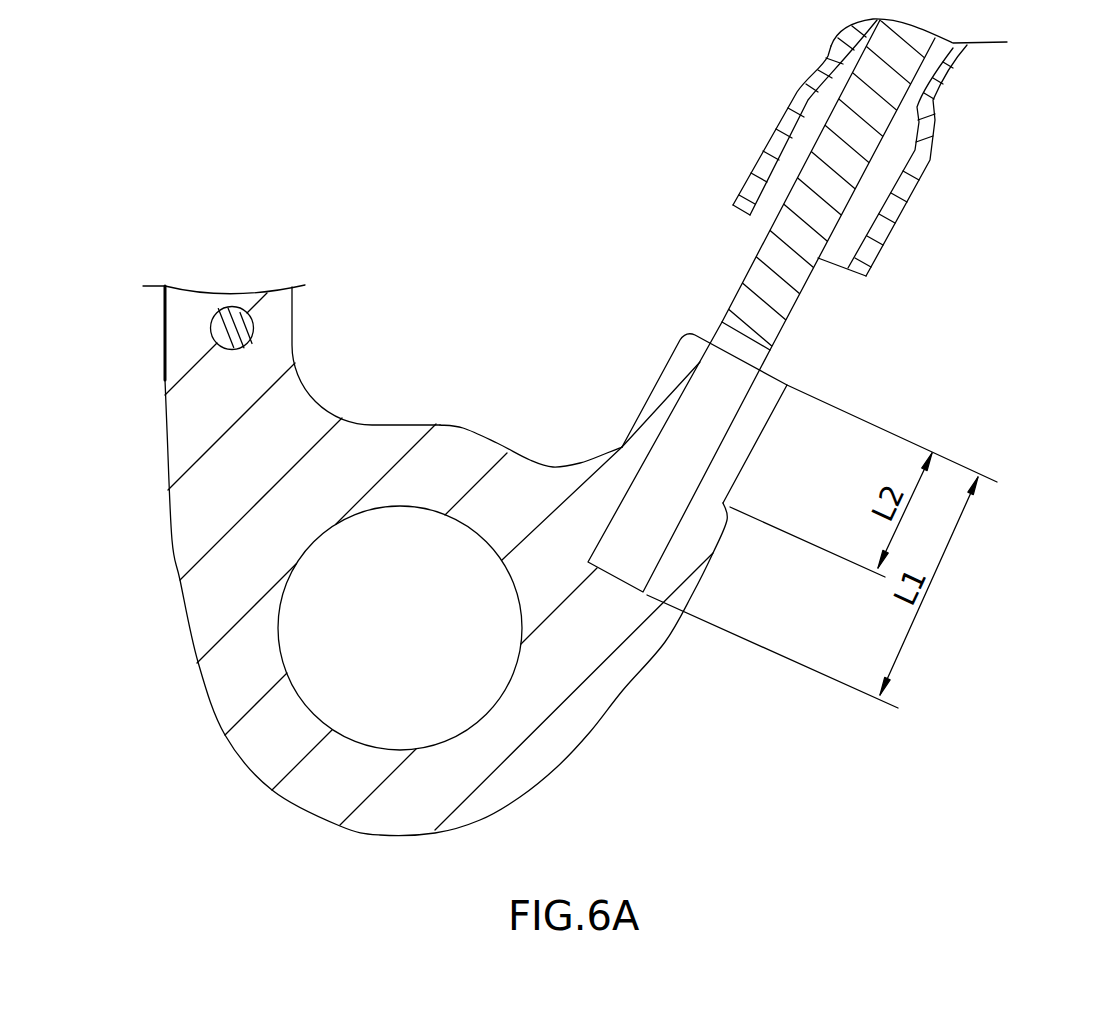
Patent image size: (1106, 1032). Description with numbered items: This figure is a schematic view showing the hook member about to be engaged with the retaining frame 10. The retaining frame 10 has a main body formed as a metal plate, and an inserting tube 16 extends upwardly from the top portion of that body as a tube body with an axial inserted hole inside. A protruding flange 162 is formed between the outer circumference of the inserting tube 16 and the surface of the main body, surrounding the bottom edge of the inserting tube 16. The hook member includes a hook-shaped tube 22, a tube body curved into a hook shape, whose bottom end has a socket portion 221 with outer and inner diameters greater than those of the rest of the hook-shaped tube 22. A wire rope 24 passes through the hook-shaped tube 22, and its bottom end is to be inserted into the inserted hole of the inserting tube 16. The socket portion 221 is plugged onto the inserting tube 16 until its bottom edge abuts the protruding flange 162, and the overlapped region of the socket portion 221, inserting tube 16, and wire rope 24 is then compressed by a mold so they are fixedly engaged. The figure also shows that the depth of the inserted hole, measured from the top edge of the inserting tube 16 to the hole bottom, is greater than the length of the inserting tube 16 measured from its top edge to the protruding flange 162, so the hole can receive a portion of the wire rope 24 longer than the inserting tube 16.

The retaining frame 10 is at (605, 743).
The inserting tube 16 is at (637, 373).
The protruding flange 162 is at (622, 447).
The hook-shaped tube 22 is at (915, 147).
The socket portion 221 is at (910, 197).
The wire rope 24 is at (778, 298).